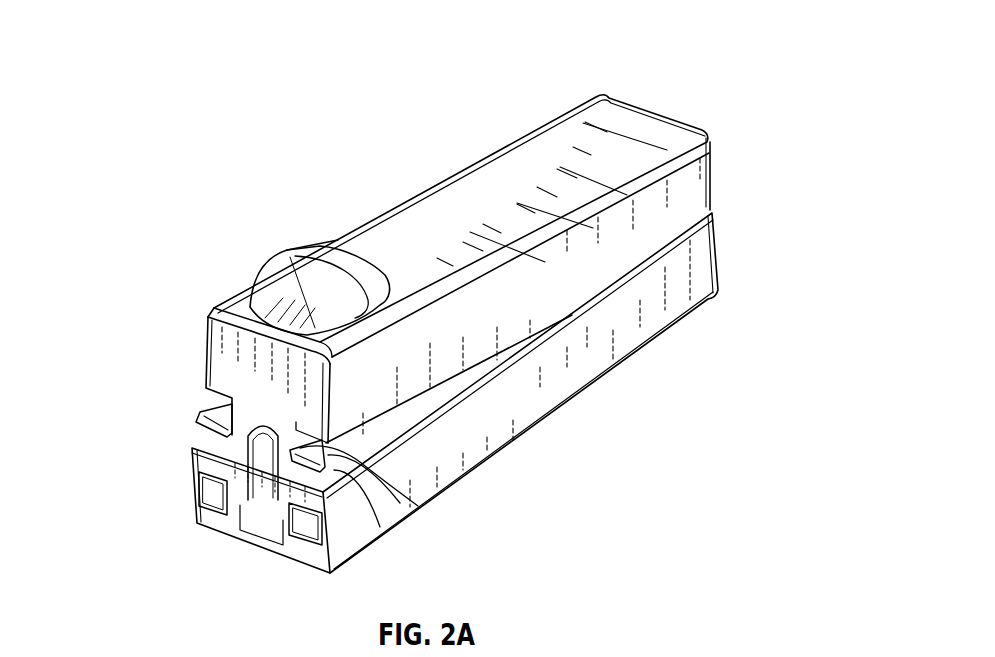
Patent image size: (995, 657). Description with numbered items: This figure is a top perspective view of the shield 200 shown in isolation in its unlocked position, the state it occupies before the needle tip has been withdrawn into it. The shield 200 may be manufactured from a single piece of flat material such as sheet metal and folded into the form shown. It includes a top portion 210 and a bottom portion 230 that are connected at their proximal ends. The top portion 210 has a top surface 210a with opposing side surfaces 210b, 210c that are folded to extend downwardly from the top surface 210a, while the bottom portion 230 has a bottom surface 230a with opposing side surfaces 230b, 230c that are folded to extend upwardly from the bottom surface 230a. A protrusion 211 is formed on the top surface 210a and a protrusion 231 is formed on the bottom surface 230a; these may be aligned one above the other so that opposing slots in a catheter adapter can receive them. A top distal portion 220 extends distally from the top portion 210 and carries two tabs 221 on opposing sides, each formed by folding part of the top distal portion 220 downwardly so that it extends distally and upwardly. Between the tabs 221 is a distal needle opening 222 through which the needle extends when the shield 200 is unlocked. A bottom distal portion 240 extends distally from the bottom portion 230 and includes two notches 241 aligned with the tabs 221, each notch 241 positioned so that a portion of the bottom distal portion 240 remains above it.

The shield 200 is at (200, 117).
The top portion 210 is at (598, 79).
The top surface 210a is at (440, 198).
The side surface 210b is at (517, 142).
The side surface 210c is at (697, 188).
The protrusion 211 is at (290, 262).
The top distal portion 220 is at (213, 365).
The tab 221 is at (200, 406).
The distal needle opening 222 is at (257, 447).
The bottom portion 230 is at (703, 325).
The bottom surface 230a is at (512, 441).
The side surface 230b is at (205, 441).
The side surface 230c is at (590, 353).
The protrusion 231 is at (380, 527).
The bottom distal portion 240 is at (258, 518).
The notch 241 is at (200, 516).